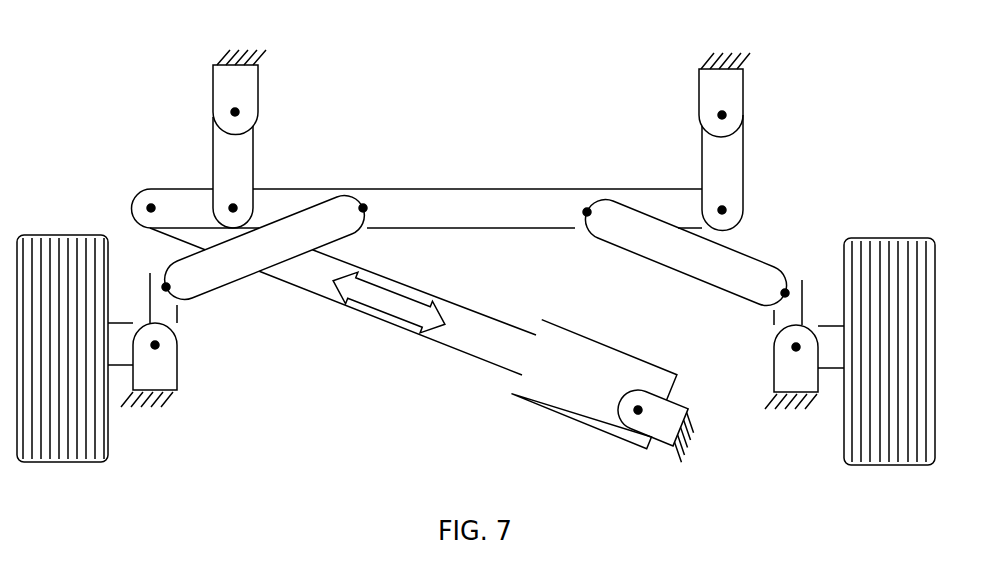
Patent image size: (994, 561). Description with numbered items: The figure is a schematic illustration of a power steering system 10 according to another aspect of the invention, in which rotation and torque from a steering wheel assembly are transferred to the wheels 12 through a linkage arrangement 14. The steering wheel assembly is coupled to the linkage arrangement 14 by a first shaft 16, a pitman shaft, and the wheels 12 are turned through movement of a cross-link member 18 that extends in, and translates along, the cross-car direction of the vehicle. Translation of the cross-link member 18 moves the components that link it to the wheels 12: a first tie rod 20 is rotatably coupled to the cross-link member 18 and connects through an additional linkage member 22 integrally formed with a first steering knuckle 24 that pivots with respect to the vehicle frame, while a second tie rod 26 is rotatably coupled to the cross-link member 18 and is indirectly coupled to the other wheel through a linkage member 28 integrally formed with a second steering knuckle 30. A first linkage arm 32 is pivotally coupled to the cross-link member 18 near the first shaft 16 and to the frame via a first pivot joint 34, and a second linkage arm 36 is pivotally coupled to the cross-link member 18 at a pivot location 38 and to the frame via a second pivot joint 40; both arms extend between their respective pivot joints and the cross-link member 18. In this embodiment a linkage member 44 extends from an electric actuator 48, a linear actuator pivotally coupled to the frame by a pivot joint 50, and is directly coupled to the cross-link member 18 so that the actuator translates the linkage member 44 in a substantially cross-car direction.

The steering system 10 is at (67, 63).
The wheel 12 is at (44, 237).
The linkage arrangement 14 is at (380, 122).
The first shaft 16 is at (725, 113).
The cross-link member 18 is at (500, 198).
The first tie rod 20 is at (650, 250).
The linkage member 22 is at (778, 322).
The first steering knuckle 24 is at (830, 362).
The second tie rod 26 is at (235, 278).
The linkage member 28 is at (172, 320).
The second steering knuckle 30 is at (125, 335).
The first linkage arm 32 is at (735, 165).
The first pivot joint 34 is at (735, 97).
The second linkage arm 36 is at (225, 152).
The pivot location 38 is at (228, 204).
The second pivot joint 40 is at (218, 86).
The linkage member 44 is at (455, 337).
The electric actuator 48 is at (557, 400).
The pivot joint 50 is at (662, 442).